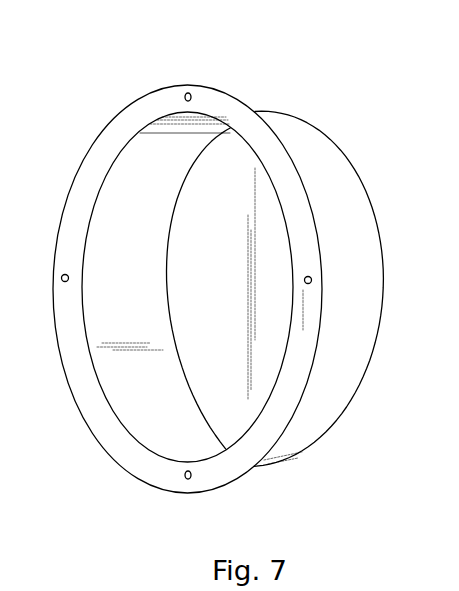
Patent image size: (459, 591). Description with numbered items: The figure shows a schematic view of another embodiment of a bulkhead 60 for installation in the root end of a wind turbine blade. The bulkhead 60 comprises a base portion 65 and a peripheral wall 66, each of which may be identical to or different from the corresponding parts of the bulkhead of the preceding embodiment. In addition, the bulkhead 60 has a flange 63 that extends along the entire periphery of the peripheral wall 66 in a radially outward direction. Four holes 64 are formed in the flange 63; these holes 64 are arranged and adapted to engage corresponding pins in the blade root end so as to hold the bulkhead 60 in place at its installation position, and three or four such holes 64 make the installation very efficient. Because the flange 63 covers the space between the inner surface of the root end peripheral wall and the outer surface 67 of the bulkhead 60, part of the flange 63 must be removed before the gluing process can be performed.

The bulkhead 60 is at (219, 274).
The flange 63 is at (120, 123).
The holes 64 is at (191, 94).
The base portion 65 is at (217, 397).
The peripheral wall 66 is at (130, 188).
The outer surface 67 is at (322, 412).